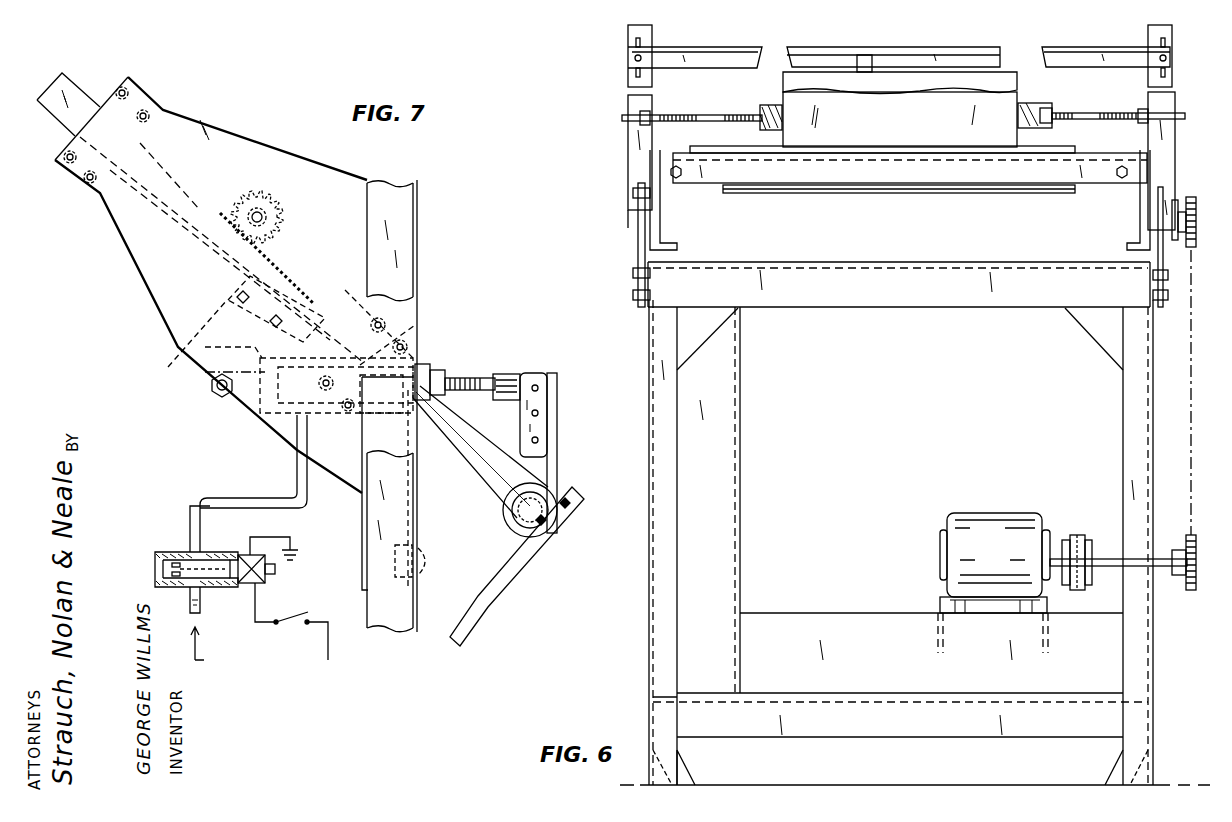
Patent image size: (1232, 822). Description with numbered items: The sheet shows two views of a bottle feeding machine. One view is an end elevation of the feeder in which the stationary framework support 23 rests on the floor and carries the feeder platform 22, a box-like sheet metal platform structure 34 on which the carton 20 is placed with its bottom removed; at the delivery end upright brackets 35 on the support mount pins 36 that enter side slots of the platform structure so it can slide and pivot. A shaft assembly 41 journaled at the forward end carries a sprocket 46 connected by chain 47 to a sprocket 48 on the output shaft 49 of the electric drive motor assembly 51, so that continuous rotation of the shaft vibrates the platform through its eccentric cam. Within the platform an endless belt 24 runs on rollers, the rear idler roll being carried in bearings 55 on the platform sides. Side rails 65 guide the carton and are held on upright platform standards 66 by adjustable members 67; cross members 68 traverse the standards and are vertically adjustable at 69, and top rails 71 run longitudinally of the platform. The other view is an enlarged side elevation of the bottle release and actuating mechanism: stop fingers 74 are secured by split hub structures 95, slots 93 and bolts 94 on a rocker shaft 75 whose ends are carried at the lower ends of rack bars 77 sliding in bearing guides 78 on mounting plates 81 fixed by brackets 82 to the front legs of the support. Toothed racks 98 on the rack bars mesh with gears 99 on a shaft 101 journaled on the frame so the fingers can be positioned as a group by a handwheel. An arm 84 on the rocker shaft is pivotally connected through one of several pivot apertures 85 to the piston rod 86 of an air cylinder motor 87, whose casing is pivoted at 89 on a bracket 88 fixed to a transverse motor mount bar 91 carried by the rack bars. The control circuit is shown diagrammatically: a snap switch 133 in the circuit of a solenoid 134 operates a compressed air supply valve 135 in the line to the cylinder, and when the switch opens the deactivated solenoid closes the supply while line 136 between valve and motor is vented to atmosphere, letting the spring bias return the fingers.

In FIG. 6, the carton 20 is at (852, 129).
In FIG. 6, the feeder platform 22 is at (1159, 154).
In FIG. 7, the framework support 23 is at (420, 222).
In FIG. 6, the framework support 23 is at (656, 451).
In FIG. 6, the endless belt 24 is at (1037, 152).
In FIG. 6, the platform structure 34 is at (661, 230).
In FIG. 6, the brackets 35 is at (640, 212).
In FIG. 6, the pins 36 is at (636, 196).
In FIG. 6, the shaft assembly 41 is at (1178, 210).
In FIG. 6, the sprocket 46 is at (1192, 222).
In FIG. 6, the chain 47 is at (1190, 505).
In FIG. 6, the sprocket 48 is at (1192, 590).
In FIG. 6, the output shaft 49 is at (1105, 559).
In FIG. 6, the electric drive motor assembly 51 is at (1040, 505).
In FIG. 6, the bearings 55 is at (1121, 180).
In FIG. 6, the side rails 65 is at (762, 108).
In FIG. 6, the platform standards 66 is at (628, 158).
In FIG. 6, the members 67 is at (704, 122).
In FIG. 6, the cross members 68 is at (733, 55).
In FIG. 6, the vertical adjustment 69 is at (635, 58).
In FIG. 6, the top rails 71 is at (925, 72).
In FIG. 7, the stop finger 74 is at (492, 596).
In FIG. 7, the rocker shaft 75 is at (522, 515).
In FIG. 7, the rack bars 77 is at (482, 487).
In FIG. 7, the bearing guides 78 is at (140, 105).
In FIG. 7, the mounting plates 81 is at (222, 143).
In FIG. 7, the brackets 82 is at (366, 558).
In FIG. 7, the arm 84 is at (553, 455).
In FIG. 7, the pivot apertures 85 is at (540, 440).
In FIG. 7, the piston rod 86 is at (460, 382).
In FIG. 7, the air cylinder motor 87 is at (288, 412).
In FIG. 7, the bracket 88 is at (225, 345).
In FIG. 7, the pivot 89 is at (211, 398).
In FIG. 7, the motor mount bar 91 is at (240, 283).
In FIG. 7, the slots 93 is at (538, 545).
In FIG. 7, the bolts 94 is at (568, 515).
In FIG. 7, the split hub structure 95 is at (520, 532).
In FIG. 7, the toothed racks 98 is at (300, 275).
In FIG. 7, the gears 99 is at (275, 205).
In FIG. 7, the shaft 101 is at (283, 218).
In FIG. 7, the switch 133 is at (296, 615).
In FIG. 7, the solenoid 134 is at (250, 585).
In FIG. 7, the compressed air supply valve 135 is at (170, 548).
In FIG. 7, the line 136 is at (232, 498).